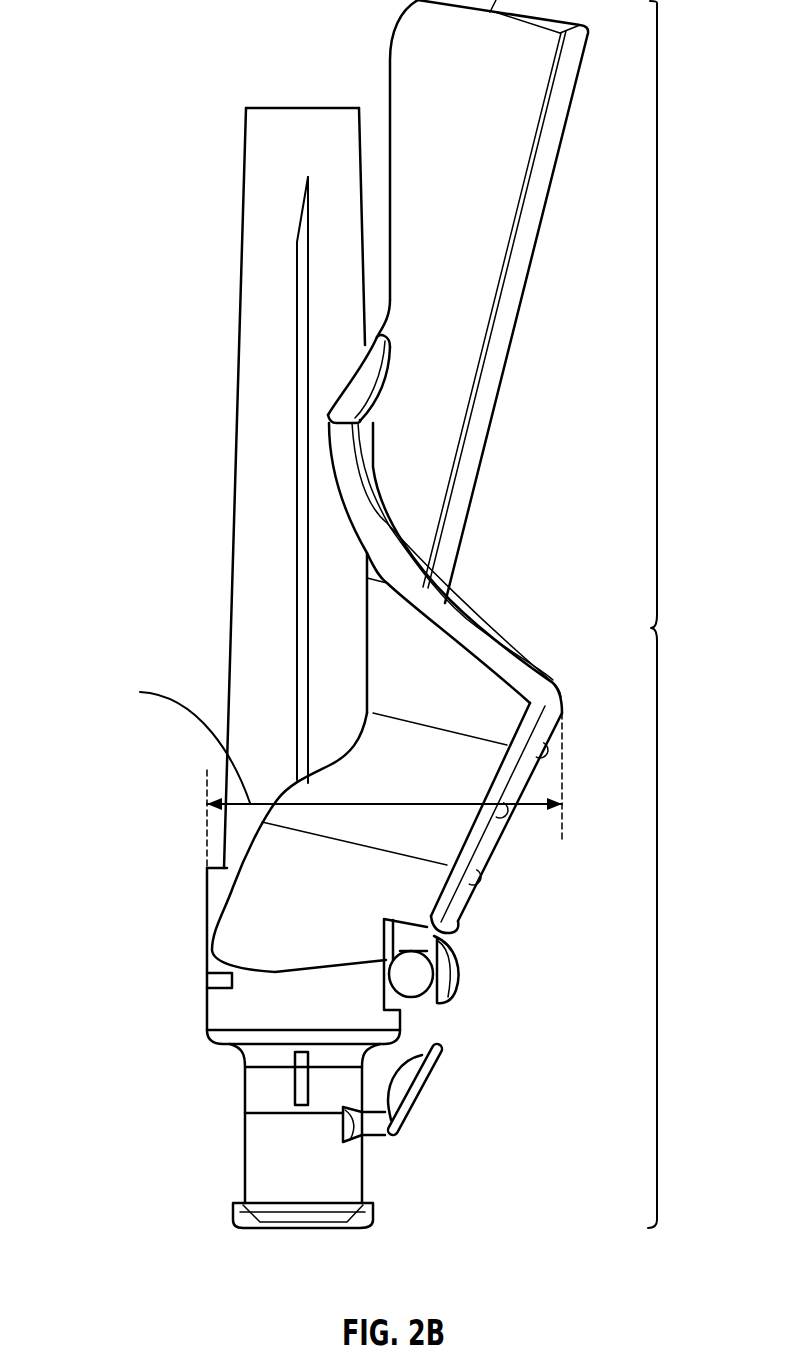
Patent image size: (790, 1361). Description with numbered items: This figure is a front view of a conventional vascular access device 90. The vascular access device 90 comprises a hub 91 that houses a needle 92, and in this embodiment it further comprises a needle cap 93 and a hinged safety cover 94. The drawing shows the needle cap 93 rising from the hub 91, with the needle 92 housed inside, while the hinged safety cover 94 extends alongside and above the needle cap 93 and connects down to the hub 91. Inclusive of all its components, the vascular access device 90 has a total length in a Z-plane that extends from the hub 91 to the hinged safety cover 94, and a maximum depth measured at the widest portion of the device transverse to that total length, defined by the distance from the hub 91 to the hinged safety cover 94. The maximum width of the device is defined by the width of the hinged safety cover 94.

The vascular access device 90 is at (97, 34).
The hub 91 is at (260, 1157).
The needle 92 is at (293, 317).
The needle cap 93 is at (263, 188).
The hinged safety cover 94 is at (502, 317).